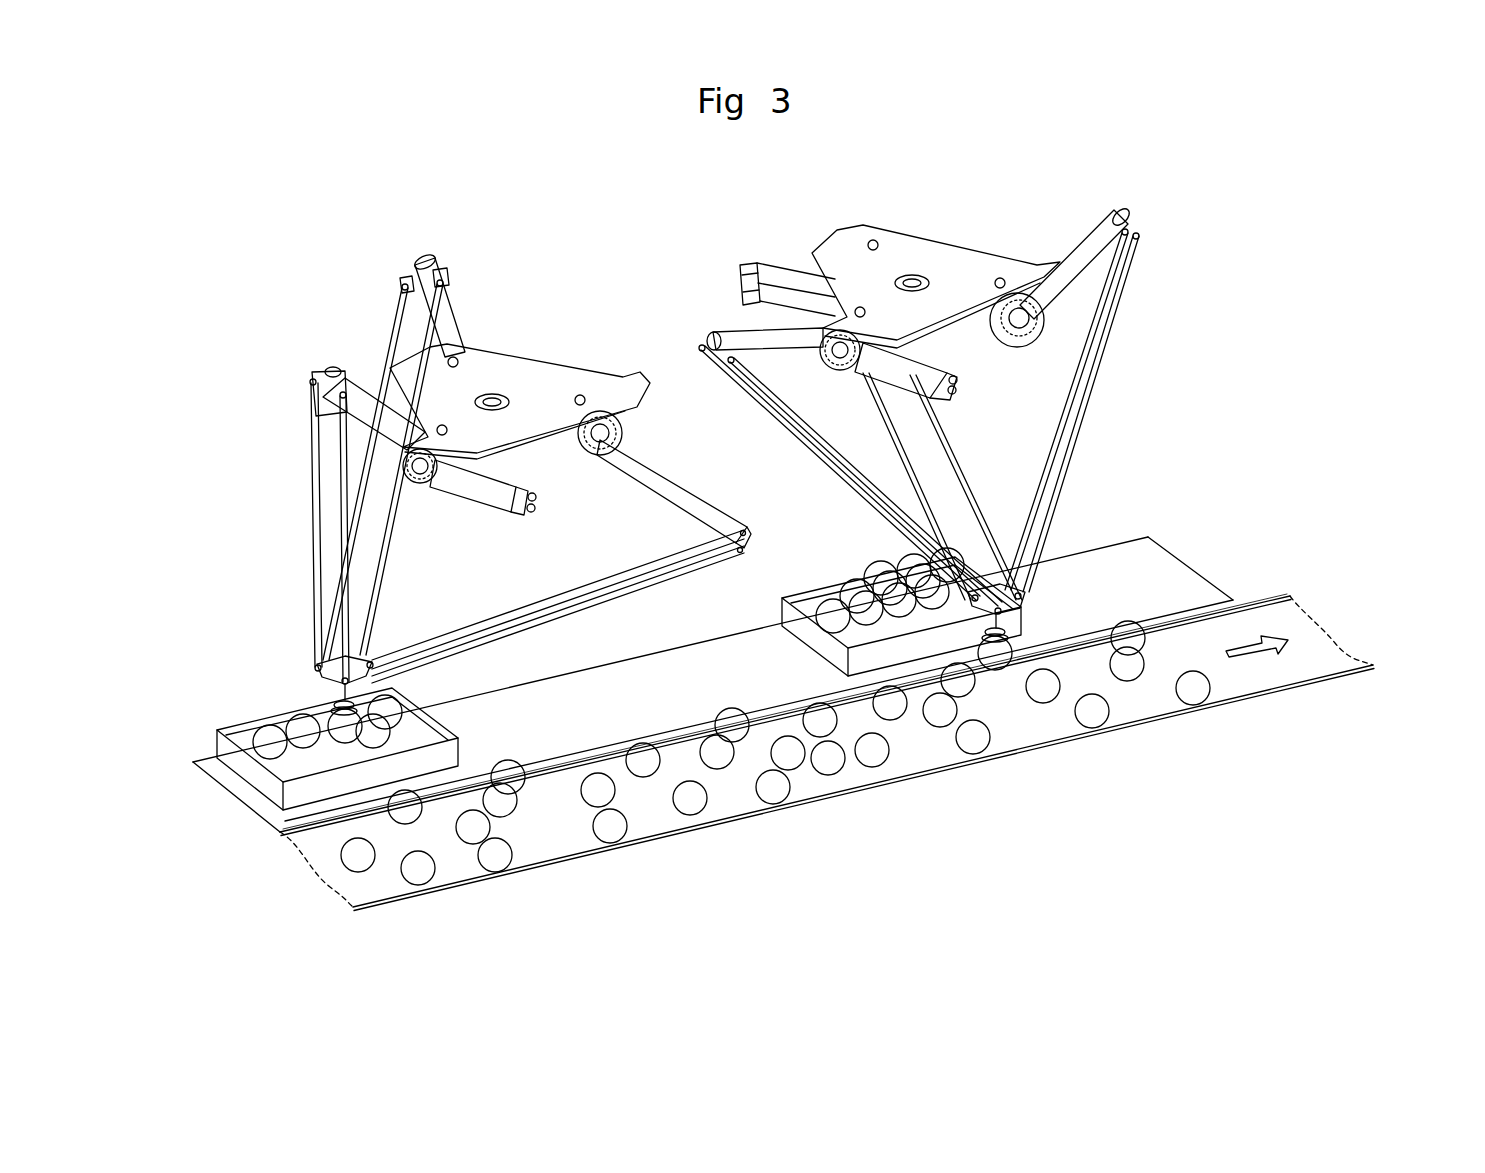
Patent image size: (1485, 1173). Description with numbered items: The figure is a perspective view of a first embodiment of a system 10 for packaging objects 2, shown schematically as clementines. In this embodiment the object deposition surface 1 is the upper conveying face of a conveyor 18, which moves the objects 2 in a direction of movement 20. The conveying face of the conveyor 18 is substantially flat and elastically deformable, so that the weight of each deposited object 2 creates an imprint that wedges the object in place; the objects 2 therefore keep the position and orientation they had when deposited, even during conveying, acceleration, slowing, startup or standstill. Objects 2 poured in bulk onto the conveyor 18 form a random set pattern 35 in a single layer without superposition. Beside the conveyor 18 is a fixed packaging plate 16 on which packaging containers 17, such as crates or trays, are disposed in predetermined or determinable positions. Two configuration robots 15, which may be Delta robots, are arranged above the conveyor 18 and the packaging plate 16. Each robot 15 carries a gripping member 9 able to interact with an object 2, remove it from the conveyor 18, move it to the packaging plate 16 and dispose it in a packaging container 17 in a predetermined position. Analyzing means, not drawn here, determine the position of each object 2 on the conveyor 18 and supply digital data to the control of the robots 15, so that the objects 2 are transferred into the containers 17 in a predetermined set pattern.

The object deposition surface 1 is at (1082, 673).
The objects 2 is at (340, 728).
The gripping member 9 is at (337, 702).
The system for packaging objects 10 is at (1252, 272).
The configuration robots 15 is at (422, 377).
The packaging plate 16 is at (1157, 593).
The packaging containers 17 is at (433, 760).
The conveyor 18 is at (1325, 607).
The direction of movement 20 is at (1252, 653).
The random set pattern 35 is at (727, 790).